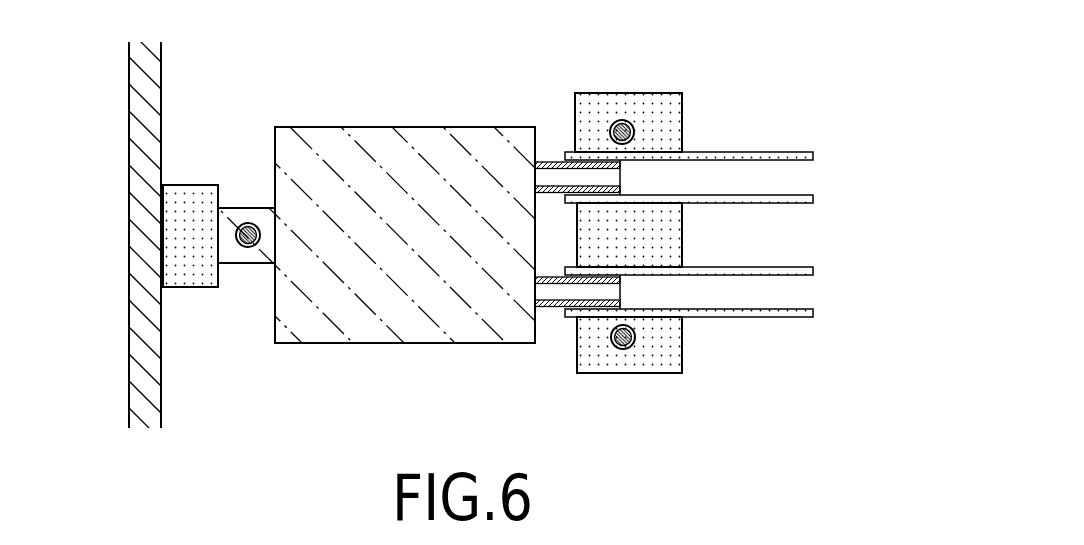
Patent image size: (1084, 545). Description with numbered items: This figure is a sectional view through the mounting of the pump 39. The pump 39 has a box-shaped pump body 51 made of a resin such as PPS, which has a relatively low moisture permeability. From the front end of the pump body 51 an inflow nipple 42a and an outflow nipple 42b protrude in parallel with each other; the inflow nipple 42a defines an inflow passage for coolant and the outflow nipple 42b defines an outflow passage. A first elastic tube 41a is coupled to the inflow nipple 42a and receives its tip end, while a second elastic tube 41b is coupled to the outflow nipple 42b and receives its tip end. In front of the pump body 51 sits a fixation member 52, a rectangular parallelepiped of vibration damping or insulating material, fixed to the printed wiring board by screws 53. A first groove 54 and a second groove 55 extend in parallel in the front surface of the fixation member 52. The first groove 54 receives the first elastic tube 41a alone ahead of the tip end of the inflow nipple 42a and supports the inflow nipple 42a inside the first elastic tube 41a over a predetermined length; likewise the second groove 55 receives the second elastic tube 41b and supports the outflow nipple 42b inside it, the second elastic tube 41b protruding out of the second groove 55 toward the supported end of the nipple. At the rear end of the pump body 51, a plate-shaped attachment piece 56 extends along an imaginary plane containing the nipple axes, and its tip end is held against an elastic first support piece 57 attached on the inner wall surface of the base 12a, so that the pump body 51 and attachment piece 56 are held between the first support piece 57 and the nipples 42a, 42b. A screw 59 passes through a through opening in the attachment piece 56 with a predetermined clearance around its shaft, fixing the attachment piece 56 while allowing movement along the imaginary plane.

The base 12a is at (130, 305).
The pump 39 is at (338, 110).
The first elastic tube 41a is at (717, 152).
The second elastic tube 41b is at (720, 267).
The inflow nipple 42a is at (547, 160).
The outflow nipple 42b is at (548, 310).
The pump body 51 is at (347, 345).
The fixation member 52 is at (618, 375).
The screws 53 is at (622, 118).
The first groove 54 is at (680, 154).
The second groove 55 is at (678, 313).
The attachment piece 56 is at (242, 207).
The first support piece 57 is at (200, 290).
The screw 59 is at (262, 233).